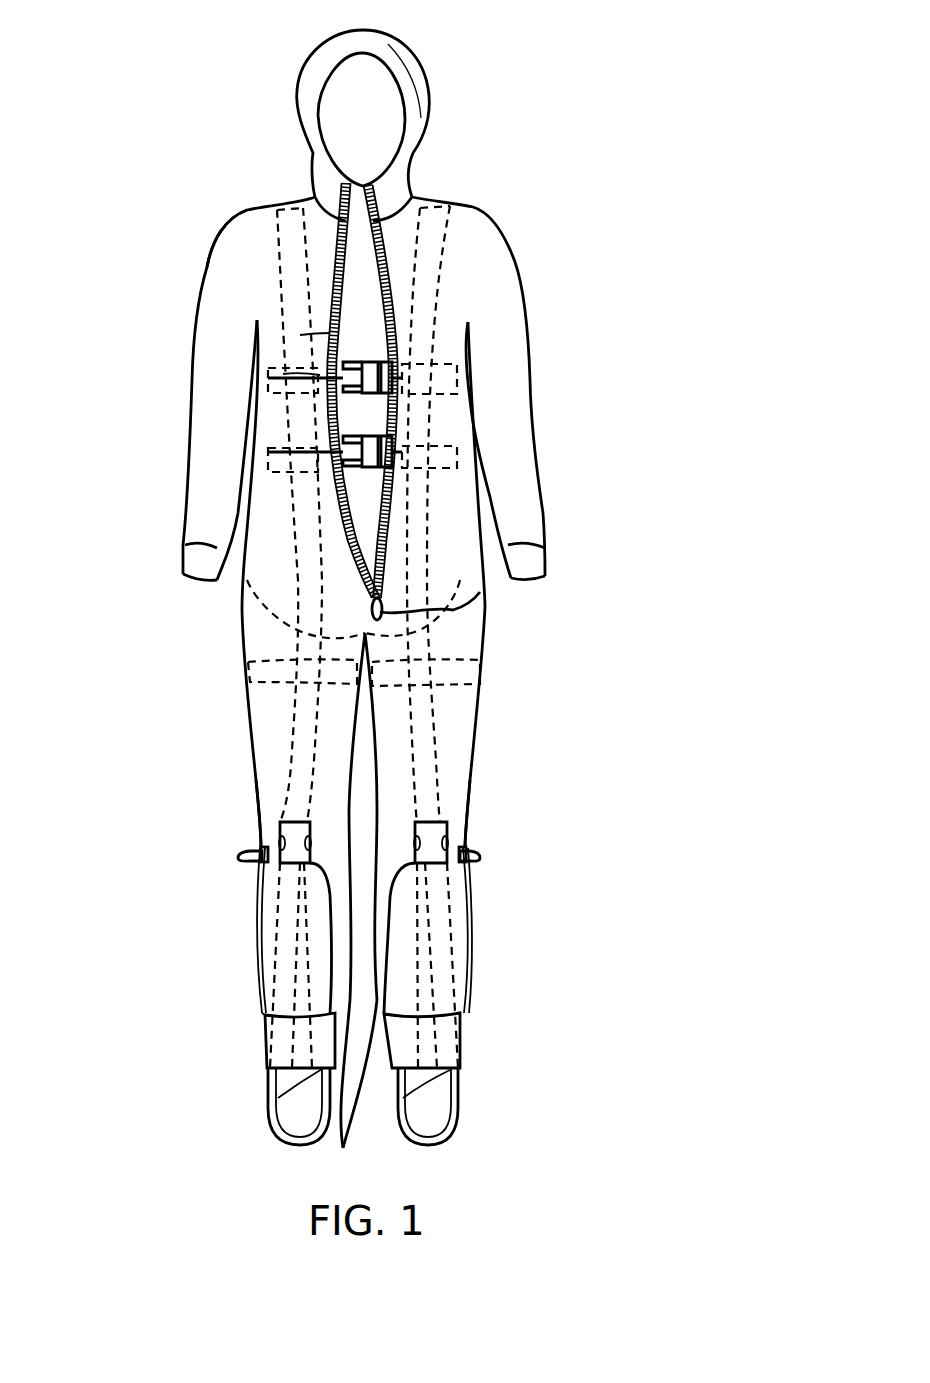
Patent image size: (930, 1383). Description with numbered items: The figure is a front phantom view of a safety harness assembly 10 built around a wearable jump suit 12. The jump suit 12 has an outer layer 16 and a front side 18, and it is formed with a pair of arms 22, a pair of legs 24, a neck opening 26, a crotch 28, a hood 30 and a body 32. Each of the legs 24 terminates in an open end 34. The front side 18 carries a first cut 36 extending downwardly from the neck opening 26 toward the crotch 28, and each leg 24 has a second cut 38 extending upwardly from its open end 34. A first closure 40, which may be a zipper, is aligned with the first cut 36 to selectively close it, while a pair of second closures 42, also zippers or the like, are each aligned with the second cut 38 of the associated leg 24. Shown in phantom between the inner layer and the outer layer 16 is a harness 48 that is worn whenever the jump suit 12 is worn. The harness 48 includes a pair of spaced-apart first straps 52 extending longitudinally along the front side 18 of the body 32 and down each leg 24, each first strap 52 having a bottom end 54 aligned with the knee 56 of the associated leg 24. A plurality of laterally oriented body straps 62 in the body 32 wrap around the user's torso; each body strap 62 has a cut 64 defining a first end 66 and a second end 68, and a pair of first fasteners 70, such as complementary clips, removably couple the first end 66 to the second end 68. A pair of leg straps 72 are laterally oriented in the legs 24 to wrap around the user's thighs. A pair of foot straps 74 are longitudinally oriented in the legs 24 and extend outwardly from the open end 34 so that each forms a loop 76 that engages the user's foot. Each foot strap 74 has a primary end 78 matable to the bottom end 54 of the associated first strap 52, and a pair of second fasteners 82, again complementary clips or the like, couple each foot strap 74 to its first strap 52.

The safety harness assembly 10 is at (525, 96).
The jump suit 12 is at (432, 155).
The outer layer 16 is at (490, 290).
The front side 18 is at (240, 234).
The arms 22 is at (193, 373).
The legs 24 is at (258, 745).
The neck opening 26 is at (355, 170).
The crotch 28 is at (375, 648).
The hood 30 is at (368, 31).
The body 32 is at (403, 328).
The open end 34 is at (330, 1073).
The first cut 36 is at (385, 282).
The second cut 38 is at (258, 946).
The first closure 40 is at (478, 608).
The second closures 42 is at (238, 858).
The harness 48 is at (290, 552).
The first straps 52 is at (287, 313).
The bottom end 54 is at (280, 830).
The knee 56 is at (248, 882).
The body straps 62 is at (295, 382).
The cut 64 is at (382, 396).
The first end 66 is at (330, 333).
The second end 68 is at (385, 361).
The first fasteners 70 is at (283, 374).
The leg straps 72 is at (248, 662).
The foot straps 74 is at (270, 972).
The loop 76 is at (292, 1147).
The primary end 78 is at (352, 1094).
The second fasteners 82 is at (305, 822).